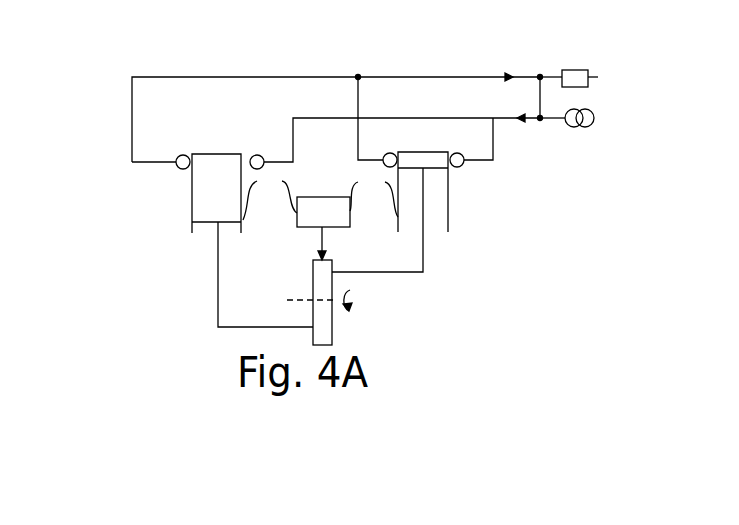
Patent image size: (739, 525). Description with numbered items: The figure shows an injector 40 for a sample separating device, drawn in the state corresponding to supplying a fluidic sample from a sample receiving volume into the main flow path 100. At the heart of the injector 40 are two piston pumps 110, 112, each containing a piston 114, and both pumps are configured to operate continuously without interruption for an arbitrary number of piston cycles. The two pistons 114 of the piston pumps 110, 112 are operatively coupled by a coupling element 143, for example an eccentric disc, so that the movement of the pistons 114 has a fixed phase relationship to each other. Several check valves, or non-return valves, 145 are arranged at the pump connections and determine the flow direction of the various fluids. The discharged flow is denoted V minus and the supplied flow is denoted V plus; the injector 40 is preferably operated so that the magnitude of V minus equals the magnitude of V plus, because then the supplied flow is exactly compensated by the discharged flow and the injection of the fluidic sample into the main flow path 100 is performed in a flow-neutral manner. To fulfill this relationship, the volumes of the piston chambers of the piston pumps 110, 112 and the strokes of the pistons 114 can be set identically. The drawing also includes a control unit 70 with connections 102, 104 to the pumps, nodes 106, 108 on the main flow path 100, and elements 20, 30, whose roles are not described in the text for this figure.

The injector 40 is at (117, 102).
The current source 20 is at (575, 128).
The resistor 30 is at (576, 70).
The control unit 70 is at (323, 212).
The main flow path 100 is at (543, 95).
The first connection 102 is at (270, 197).
The second connection 104 is at (374, 195).
The first node 106 is at (540, 76).
The second node 108 is at (540, 120).
The piston pump 110 is at (192, 188).
The piston pump 112 is at (460, 167).
The piston 114 is at (202, 223).
The coupling element 143 is at (320, 277).
The check valve 145 is at (258, 155).